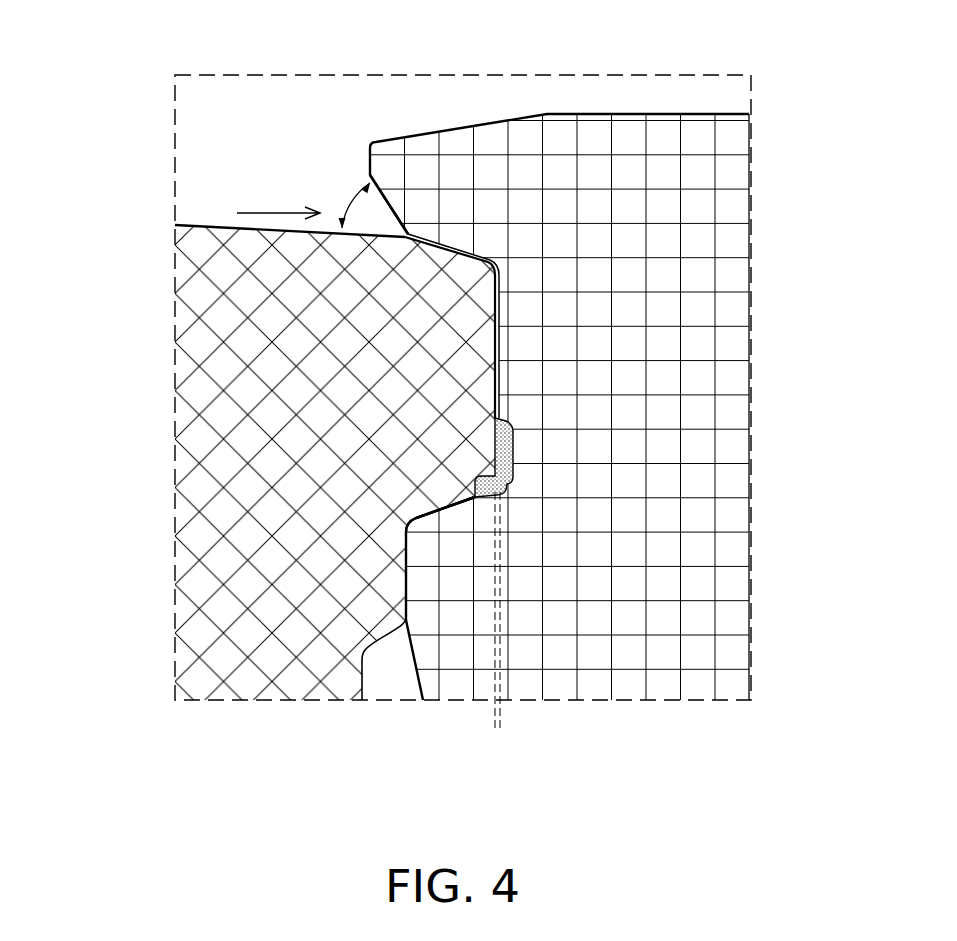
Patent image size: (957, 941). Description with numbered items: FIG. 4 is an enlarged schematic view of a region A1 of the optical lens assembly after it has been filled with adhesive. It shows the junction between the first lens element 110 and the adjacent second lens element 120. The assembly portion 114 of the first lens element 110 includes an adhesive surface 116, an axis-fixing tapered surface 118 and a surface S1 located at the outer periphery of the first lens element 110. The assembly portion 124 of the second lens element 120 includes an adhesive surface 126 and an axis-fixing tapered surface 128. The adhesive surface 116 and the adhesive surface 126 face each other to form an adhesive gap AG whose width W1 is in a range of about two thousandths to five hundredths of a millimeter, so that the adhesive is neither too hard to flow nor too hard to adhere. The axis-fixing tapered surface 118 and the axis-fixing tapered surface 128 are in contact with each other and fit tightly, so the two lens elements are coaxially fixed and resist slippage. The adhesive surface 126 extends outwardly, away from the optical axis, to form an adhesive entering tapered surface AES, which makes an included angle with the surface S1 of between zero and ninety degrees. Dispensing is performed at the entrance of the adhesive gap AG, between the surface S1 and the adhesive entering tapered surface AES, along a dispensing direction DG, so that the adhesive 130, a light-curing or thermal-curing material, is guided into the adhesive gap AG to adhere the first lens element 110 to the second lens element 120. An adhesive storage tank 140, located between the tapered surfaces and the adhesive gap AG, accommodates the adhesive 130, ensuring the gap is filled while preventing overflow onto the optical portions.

The first lens element 110 is at (266, 462).
The assembly portion 114 is at (245, 393).
The adhesive surface 116 is at (494, 385).
The axis-fixing tapered surface 118 is at (447, 504).
The second lens element 120 is at (632, 407).
The assembly portion 124 is at (690, 376).
The adhesive surface 126 is at (457, 244).
The axis-fixing tapered surface 128 is at (452, 512).
The adhesive 130 is at (507, 469).
The adhesive storage tank 140 is at (505, 450).
The surface S1 is at (225, 227).
The dispensing direction DG is at (278, 211).
The adhesive entering tapered surface AES is at (390, 217).
The adhesive gap AG is at (403, 235).
The region A1 is at (637, 73).
The width W1 is at (527, 720).